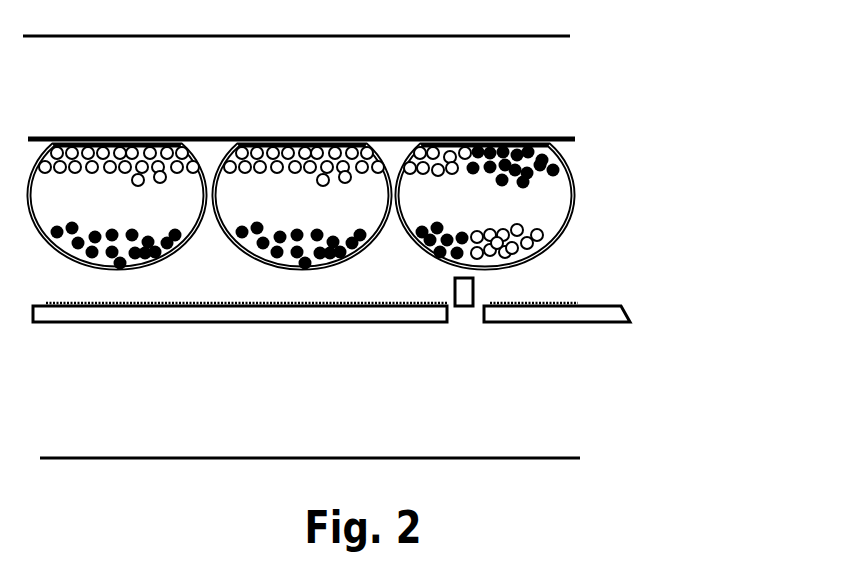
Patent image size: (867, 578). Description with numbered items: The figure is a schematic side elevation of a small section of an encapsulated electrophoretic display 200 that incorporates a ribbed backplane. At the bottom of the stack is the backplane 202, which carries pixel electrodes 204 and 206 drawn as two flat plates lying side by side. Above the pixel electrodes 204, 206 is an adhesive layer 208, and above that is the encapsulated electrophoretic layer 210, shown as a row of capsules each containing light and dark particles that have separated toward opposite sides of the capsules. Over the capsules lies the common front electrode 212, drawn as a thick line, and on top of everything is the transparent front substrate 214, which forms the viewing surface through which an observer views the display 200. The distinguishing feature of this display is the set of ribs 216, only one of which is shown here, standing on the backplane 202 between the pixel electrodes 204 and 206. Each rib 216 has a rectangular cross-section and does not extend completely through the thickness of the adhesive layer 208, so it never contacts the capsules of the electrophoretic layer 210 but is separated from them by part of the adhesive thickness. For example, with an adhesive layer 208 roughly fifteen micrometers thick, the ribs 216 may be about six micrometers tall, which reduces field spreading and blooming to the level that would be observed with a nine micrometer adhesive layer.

The encapsulated electrophoretic display 200 is at (423, 247).
The backplane 202 is at (313, 404).
The pixel electrode 204 is at (400, 323).
The pixel electrode 206 is at (621, 310).
The adhesive layer 208 is at (425, 269).
The encapsulated electrophoretic layer 210 is at (515, 217).
The common front electrode 212 is at (413, 138).
The transparent front substrate 214 is at (365, 92).
The rib 216 is at (462, 300).